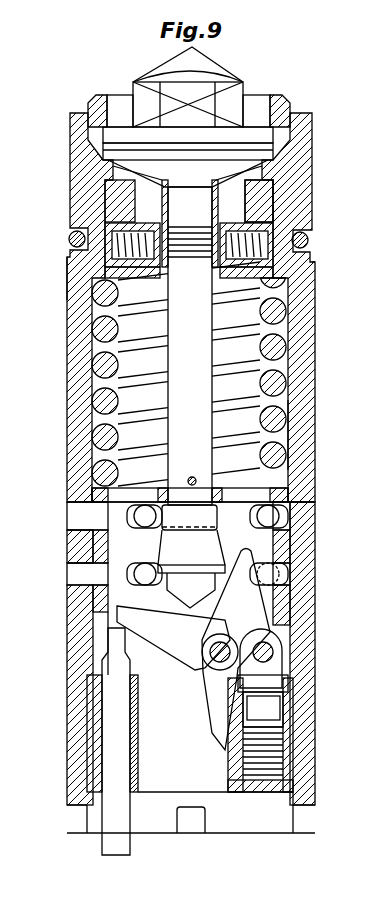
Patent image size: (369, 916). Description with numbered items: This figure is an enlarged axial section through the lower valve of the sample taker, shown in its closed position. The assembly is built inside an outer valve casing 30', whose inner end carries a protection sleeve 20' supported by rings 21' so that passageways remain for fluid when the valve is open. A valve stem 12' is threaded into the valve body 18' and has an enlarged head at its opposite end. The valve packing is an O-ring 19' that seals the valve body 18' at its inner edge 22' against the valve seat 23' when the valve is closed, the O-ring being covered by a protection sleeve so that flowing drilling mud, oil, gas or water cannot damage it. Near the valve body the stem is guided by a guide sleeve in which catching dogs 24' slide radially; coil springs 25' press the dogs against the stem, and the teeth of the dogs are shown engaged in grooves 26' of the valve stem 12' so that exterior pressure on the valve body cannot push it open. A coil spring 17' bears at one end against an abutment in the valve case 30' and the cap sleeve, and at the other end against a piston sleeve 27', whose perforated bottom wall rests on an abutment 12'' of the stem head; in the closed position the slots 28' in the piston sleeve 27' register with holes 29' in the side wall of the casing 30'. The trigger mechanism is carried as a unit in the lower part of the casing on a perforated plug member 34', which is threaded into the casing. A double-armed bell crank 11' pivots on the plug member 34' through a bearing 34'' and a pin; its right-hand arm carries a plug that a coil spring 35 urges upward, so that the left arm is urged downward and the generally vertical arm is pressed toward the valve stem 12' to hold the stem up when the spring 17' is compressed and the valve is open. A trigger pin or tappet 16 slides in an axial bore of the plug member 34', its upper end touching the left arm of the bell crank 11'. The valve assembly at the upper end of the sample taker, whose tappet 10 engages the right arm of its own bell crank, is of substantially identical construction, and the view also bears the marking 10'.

The tappet 10 is at (192, 307).
The upper housing part 10' is at (43, 282).
The bell crank 11' is at (174, 667).
The valve stem 12' is at (191, 346).
The abutment 12'' is at (211, 539).
The trigger pin 16 is at (110, 849).
The coil spring 17' is at (159, 374).
The valve body 18' is at (198, 95).
The O-ring 19' is at (228, 145).
The protection sleeve 20' is at (174, 88).
The rings 21' is at (166, 101).
The inner edge 22' is at (188, 172).
The valve seat 23' is at (229, 195).
The catching dogs 24' is at (189, 268).
The coil springs 25' is at (124, 218).
The grooves 26' is at (190, 226).
The piston sleeve 27' is at (160, 484).
The slots 28' is at (134, 545).
The holes 29' is at (60, 545).
The valve casing 30' is at (324, 435).
The perforated plug member 34' is at (158, 733).
The bearing 34'' is at (193, 650).
The coil spring 35 is at (292, 746).